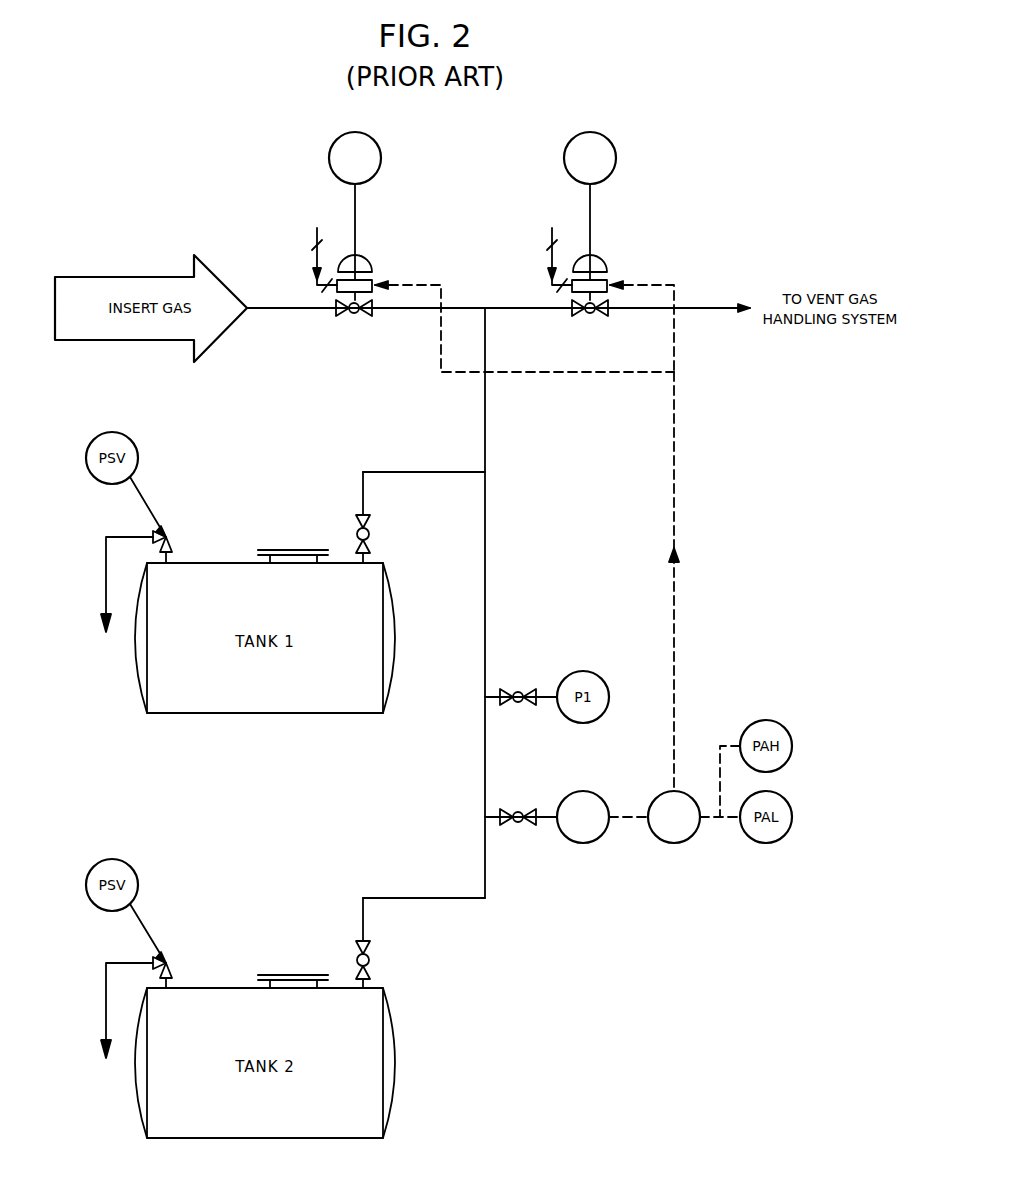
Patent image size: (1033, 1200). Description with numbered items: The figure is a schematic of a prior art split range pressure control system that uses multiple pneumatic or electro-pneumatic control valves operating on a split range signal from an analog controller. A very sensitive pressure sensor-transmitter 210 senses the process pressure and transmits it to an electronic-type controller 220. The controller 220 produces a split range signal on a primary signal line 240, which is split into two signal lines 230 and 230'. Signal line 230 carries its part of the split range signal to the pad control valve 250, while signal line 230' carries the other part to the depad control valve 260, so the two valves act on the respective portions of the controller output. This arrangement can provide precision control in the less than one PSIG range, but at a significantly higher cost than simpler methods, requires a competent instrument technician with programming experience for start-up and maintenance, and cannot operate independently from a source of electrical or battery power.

The pad control valve 250 is at (378, 277).
The depad control valve 260 is at (604, 252).
The signal line 230 is at (524, 374).
The signal line 230' is at (689, 340).
The primary signal line 240 is at (682, 534).
The pressure sensor-transmitter 210 is at (567, 846).
The controller 220 is at (674, 847).